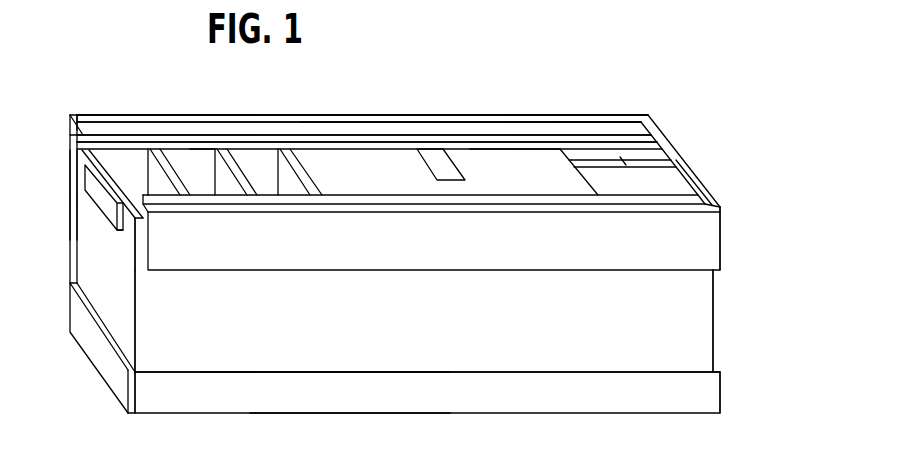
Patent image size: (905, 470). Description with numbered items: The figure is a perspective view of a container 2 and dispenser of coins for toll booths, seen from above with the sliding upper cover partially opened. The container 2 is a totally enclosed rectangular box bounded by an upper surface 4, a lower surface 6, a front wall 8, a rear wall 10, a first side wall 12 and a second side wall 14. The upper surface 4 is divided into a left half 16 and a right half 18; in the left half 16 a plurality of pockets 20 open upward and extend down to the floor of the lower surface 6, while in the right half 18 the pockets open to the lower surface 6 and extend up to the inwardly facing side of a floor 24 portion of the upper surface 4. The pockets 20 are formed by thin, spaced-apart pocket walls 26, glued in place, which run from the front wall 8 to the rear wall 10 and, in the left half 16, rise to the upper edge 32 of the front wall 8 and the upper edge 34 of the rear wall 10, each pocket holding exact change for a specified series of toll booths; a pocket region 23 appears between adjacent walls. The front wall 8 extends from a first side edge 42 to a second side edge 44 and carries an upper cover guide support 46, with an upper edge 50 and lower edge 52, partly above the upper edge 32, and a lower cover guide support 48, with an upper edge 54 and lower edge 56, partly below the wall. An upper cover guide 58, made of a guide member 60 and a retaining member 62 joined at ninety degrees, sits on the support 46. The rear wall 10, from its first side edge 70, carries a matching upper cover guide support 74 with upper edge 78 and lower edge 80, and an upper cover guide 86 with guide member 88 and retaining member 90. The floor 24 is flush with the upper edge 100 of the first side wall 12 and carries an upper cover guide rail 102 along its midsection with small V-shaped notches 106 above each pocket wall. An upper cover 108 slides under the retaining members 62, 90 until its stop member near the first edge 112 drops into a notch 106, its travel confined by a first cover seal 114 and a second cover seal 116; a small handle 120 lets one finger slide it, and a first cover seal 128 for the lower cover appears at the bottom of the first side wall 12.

The container 2 is at (439, 68).
The upper surface 4 is at (578, 100).
The lower surface 6 is at (455, 414).
The front wall 8 is at (483, 339).
The rear wall 10 is at (70, 238).
The first side wall 12 is at (72, 284).
The second side wall 14 is at (716, 320).
The left half 16 is at (176, 112).
The right half 18 is at (532, 112).
The pockets 20 is at (262, 150).
The deck opening 23 is at (225, 184).
The floor 24 is at (668, 150).
The pocket walls 26 is at (228, 150).
The upper edge of front wall 32 is at (143, 220).
The upper edge of rear wall 34 is at (130, 142).
The first side edge of front wall 42 is at (137, 346).
The second side edge of front wall 44 is at (706, 298).
The upper cover guide support 46 is at (718, 232).
The lower cover guide support 48 is at (720, 400).
The upper edge of upper cover guide support 50 is at (553, 212).
The lower edge of upper cover guide support 52 is at (388, 270).
The upper edge of lower cover guide support 54 is at (318, 372).
The lower edge of lower cover guide support 56 is at (345, 414).
The upper cover guide 58 is at (370, 212).
The guide member 60 is at (148, 214).
The retaining member 62 is at (137, 204).
The first side edge of rear wall 70 is at (76, 210).
The upper cover guide support 74 is at (80, 118).
The upper edge of upper cover guide support 78 is at (355, 118).
The lower edge of upper cover guide support 80 is at (72, 176).
The upper cover guide 86 is at (610, 128).
The guide member 88 is at (73, 142).
The retaining member 90 is at (90, 126).
The upper edge of first side wall 100 is at (122, 233).
The upper cover guide rail 102 is at (670, 162).
The V-shaped notches 106 is at (625, 162).
The upper cover 108 is at (500, 158).
The first edge of upper cover 112 is at (585, 186).
The first cover seal 114 is at (105, 215).
The second cover seal 116 is at (712, 178).
The handle 120 is at (425, 160).
The first cover seal 128 is at (90, 340).